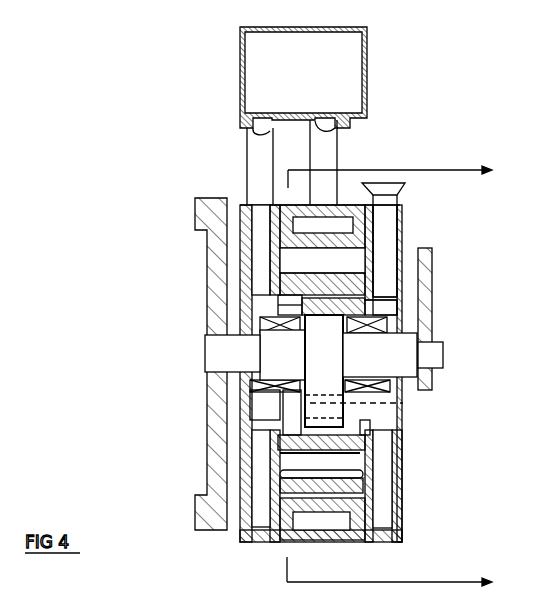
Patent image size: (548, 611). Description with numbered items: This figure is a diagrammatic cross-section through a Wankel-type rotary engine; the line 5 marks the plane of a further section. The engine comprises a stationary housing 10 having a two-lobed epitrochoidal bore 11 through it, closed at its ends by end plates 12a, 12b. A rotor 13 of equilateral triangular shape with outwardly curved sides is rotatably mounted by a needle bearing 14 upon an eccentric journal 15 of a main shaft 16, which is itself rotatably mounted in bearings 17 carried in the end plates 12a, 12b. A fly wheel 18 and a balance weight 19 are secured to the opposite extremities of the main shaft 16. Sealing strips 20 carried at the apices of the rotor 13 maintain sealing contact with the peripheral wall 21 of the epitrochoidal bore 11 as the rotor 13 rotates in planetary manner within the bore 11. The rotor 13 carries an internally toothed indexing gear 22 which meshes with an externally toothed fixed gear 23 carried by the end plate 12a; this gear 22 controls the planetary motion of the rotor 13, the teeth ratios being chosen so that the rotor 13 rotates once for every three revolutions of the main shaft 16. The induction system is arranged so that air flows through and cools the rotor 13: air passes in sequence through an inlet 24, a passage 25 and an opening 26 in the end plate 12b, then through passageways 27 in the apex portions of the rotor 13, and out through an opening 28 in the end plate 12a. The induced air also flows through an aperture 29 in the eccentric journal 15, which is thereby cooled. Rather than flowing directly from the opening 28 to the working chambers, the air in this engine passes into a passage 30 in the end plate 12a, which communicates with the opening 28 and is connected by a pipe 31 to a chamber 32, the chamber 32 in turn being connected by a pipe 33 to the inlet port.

The stationary housing 10 is at (320, 542).
The epitrochoidal bore 11 is at (322, 239).
The end plate 12a is at (255, 535).
The end plate 12b is at (392, 540).
The rotor 13 is at (358, 282).
The needle bearing 14 is at (395, 427).
The eccentric journal 15 is at (320, 371).
The main shaft 16 is at (380, 355).
The bearings 17 is at (272, 342).
The fly wheel 18 is at (203, 210).
The balance weight 19 is at (427, 270).
The sealing strips 20 is at (358, 498).
The peripheral wall 21 is at (275, 258).
The indexing gear 22 is at (282, 443).
The fixed gear 23 is at (297, 312).
The inlet 24 is at (380, 187).
The passage 25 is at (393, 220).
The opening 26 is at (385, 305).
The passageways 27 is at (348, 463).
The opening 28 is at (267, 308).
The aperture 29 is at (368, 409).
The passage 30 is at (262, 287).
The pipe 31 is at (257, 145).
The chamber 32 is at (303, 77).
The pipe 33 is at (328, 148).
The section line 5 is at (389, 367).